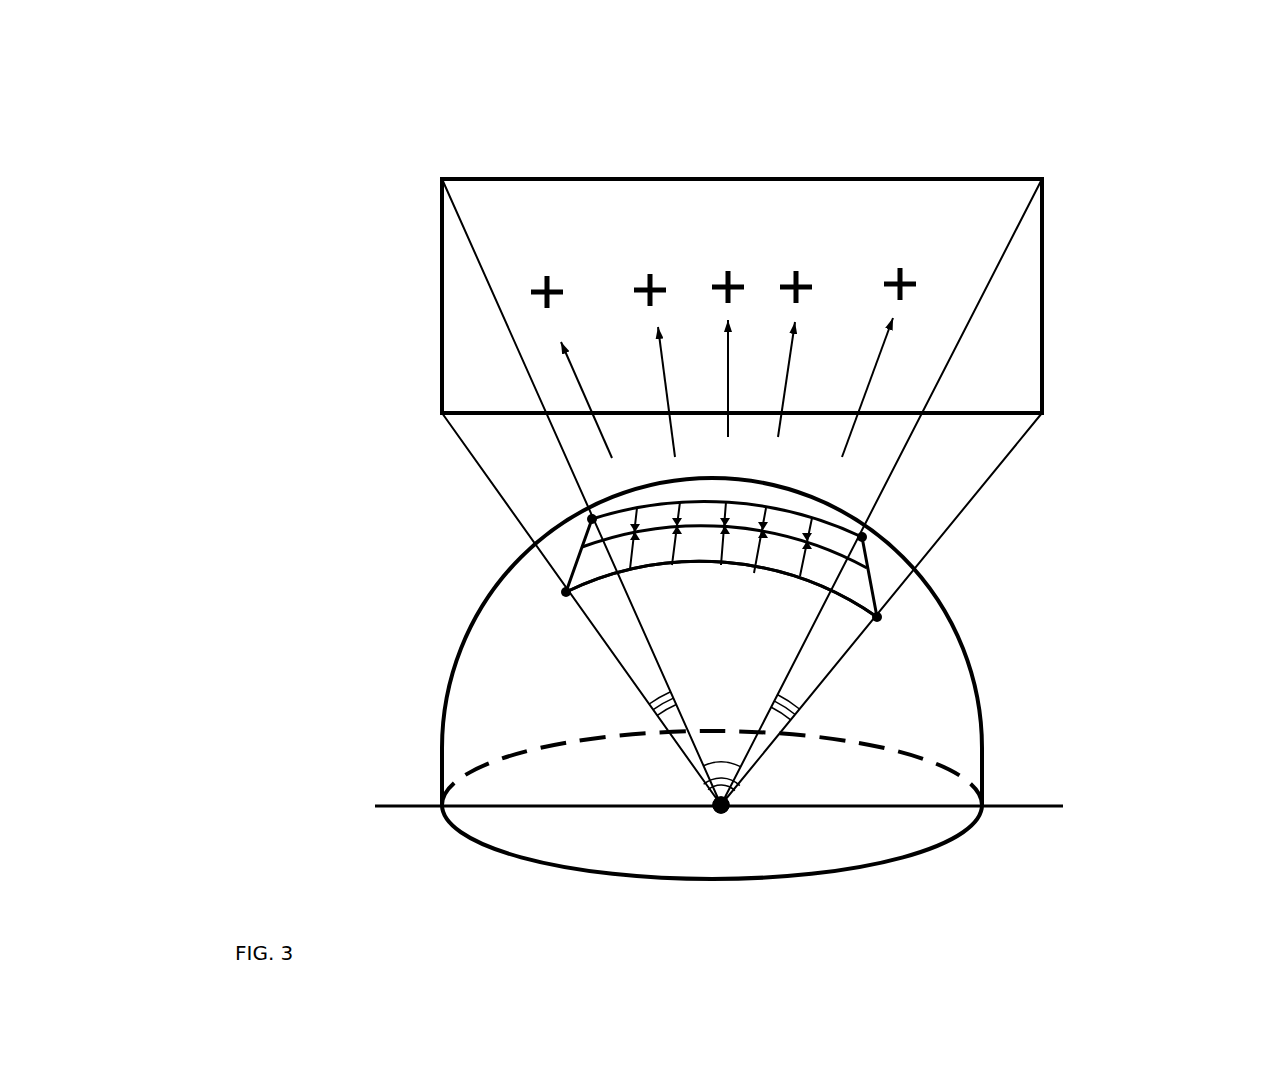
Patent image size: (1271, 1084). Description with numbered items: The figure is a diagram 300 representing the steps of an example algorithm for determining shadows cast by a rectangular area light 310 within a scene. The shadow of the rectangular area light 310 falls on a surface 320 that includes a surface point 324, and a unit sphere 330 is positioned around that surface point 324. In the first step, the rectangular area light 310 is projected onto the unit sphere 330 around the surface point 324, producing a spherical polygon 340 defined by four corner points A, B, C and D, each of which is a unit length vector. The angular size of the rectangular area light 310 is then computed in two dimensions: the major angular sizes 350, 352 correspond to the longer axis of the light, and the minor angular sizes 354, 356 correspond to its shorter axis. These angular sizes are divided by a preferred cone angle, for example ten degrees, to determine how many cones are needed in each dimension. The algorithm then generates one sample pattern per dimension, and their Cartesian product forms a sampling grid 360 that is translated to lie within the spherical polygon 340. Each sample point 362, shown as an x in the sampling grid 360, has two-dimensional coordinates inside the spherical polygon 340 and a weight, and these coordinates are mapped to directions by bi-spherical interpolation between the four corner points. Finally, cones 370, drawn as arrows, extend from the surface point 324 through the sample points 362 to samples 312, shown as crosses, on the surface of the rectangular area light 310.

The diagram 300 is at (142, 88).
The rectangular area light 310 is at (1046, 265).
The samples 312 is at (522, 292).
The surface 320 is at (1013, 803).
The surface point 324 is at (718, 814).
The unit sphere 330 is at (968, 645).
The spherical polygon 340 is at (875, 567).
The major angular size 350 is at (735, 793).
The major angular size 352 is at (720, 762).
The minor angular size 354 is at (806, 712).
The minor angular size 356 is at (648, 717).
The sampling grid 360 is at (668, 563).
The sample point 362 is at (610, 538).
The cones 370 is at (570, 380).